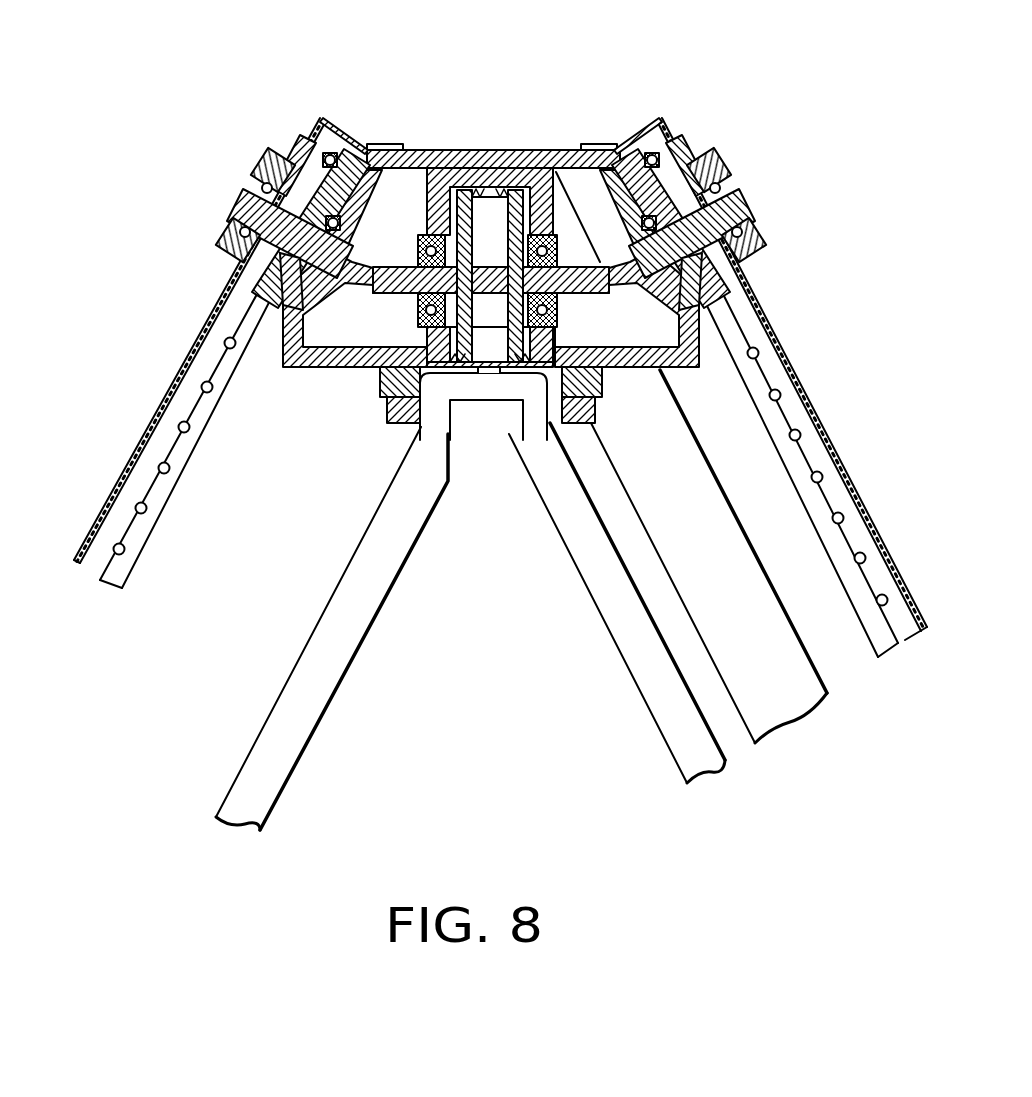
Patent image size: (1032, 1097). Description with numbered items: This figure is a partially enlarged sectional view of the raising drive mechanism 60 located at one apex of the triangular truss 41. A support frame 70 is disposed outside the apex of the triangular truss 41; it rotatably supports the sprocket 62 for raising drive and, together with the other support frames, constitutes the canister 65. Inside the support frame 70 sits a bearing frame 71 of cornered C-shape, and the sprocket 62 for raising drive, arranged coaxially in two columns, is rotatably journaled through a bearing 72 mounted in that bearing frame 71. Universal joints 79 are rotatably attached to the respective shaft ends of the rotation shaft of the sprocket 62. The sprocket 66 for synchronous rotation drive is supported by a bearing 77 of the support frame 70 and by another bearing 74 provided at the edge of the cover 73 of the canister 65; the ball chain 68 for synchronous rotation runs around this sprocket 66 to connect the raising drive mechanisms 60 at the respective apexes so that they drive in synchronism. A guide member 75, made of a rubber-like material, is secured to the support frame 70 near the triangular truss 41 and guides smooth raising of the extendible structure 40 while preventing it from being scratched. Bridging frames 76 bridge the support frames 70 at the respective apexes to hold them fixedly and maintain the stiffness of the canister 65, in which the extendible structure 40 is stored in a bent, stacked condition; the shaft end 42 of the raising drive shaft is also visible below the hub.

The extendible structure 40 is at (492, 480).
The triangular truss 41 is at (642, 686).
The shaft end 42 is at (489, 375).
The raising drive mechanism 60 is at (504, 132).
The sprocket for raising drive 62 is at (490, 208).
The canister 65 is at (796, 339).
The sprocket for synchronous rotation drive 66 is at (248, 196).
The ball chain for synchronous rotation 68 is at (150, 493).
The support frame 70 is at (688, 372).
The bearing frame 71 is at (533, 170).
The bearing 72 is at (424, 254).
The cover 73 is at (325, 120).
The bearing 74 is at (222, 236).
The guide member 75 is at (388, 411).
The bridging frame 76 is at (789, 630).
The bearing 77 is at (240, 285).
The universal joint 79 is at (337, 282).